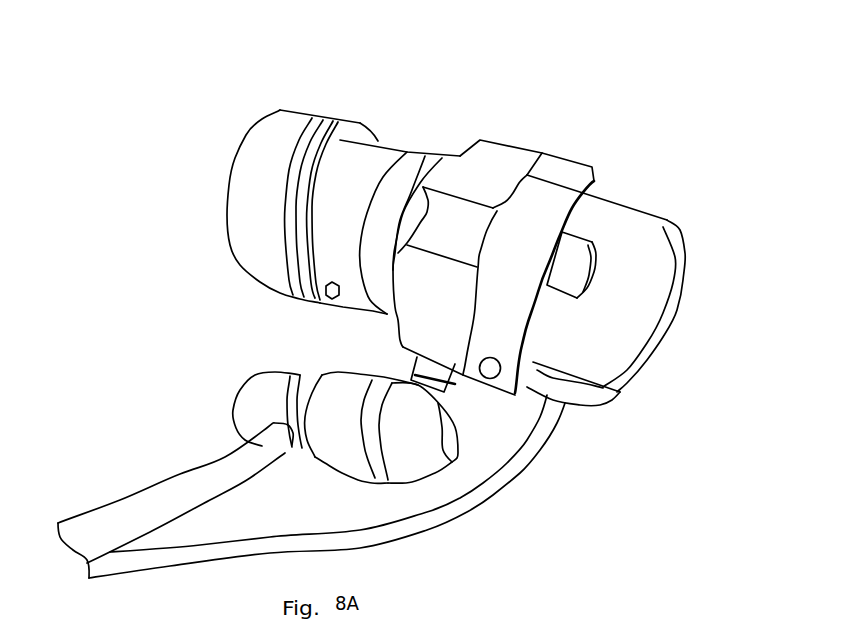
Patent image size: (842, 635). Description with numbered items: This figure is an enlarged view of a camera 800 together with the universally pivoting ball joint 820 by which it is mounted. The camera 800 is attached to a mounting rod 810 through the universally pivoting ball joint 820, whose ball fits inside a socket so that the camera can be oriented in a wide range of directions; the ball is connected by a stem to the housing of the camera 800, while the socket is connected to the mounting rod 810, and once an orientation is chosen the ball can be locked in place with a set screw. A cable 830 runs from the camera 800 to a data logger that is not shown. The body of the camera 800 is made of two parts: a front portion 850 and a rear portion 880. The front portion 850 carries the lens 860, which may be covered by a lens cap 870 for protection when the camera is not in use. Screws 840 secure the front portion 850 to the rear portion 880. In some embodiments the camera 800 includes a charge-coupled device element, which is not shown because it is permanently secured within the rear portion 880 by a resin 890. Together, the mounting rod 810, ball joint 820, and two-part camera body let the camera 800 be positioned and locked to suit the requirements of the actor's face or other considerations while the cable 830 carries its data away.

The camera 800 is at (177, 305).
The mounting rod 810 is at (127, 507).
The universally pivoting ball joint 820 is at (420, 463).
The cable 830 is at (467, 510).
The screws 840 is at (580, 242).
The front portion 850 is at (476, 93).
The lens 860 is at (358, 140).
The lens cap 870 is at (302, 122).
The rear portion 880 is at (636, 172).
The resin 890 is at (660, 333).